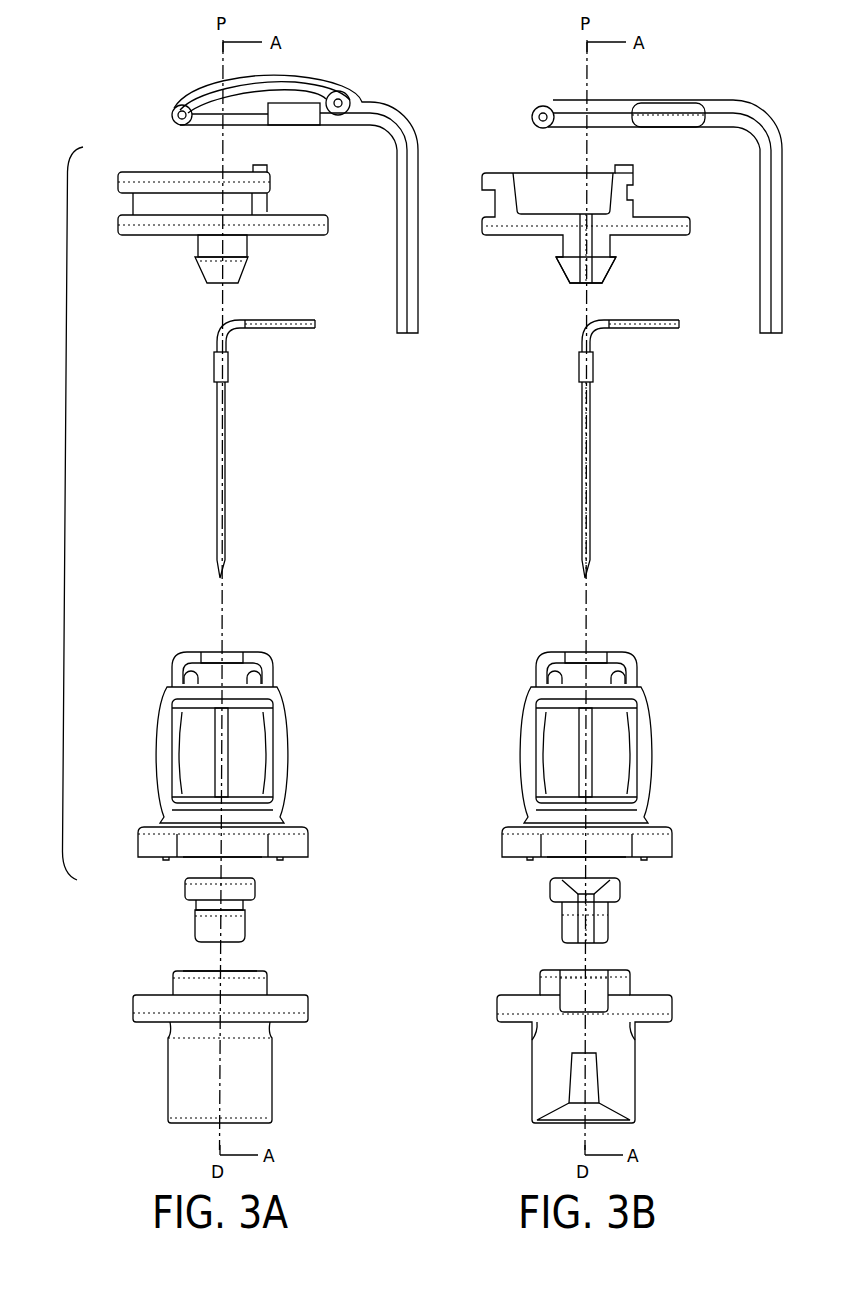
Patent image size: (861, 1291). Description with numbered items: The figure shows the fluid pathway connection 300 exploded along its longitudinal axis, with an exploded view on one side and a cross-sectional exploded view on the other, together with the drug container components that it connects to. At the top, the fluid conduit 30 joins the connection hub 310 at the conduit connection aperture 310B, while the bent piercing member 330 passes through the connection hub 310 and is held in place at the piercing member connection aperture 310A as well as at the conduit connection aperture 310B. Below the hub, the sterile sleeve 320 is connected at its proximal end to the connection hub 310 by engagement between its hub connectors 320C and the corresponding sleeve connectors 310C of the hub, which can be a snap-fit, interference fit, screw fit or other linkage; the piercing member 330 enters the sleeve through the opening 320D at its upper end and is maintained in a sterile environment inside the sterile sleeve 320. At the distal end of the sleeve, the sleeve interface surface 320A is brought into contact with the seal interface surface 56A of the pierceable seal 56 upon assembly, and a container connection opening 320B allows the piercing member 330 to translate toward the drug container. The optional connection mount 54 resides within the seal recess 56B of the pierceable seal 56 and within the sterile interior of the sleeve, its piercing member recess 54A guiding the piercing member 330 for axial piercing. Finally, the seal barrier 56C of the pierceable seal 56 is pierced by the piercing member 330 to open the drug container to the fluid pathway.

In FIG. 3A, the fluid conduit 30 is at (420, 180).
In FIG. 3B, the fluid conduit 30 is at (783, 180).
In FIG. 3A, the fluid pathway connection 300 is at (65, 520).
In FIG. 3A, the connection hub 310 is at (217, 240).
In FIG. 3B, the connection hub 310 is at (583, 238).
In FIG. 3B, the piercing member connection aperture 310A is at (585, 290).
In FIG. 3B, the conduit connection aperture 310B is at (630, 184).
In FIG. 3A, the sleeve connectors 310C is at (197, 258).
In FIG. 3B, the sleeve connectors 310C is at (620, 250).
In FIG. 3A, the sterile sleeve 320 is at (222, 747).
In FIG. 3B, the sterile sleeve 320 is at (584, 747).
In FIG. 3A, the sleeve interface surface 320A is at (300, 857).
In FIG. 3B, the sleeve interface surface 320A is at (634, 850).
In FIG. 3A, the container connection opening 320B is at (193, 858).
In FIG. 3B, the container connection opening 320B is at (514, 890).
In FIG. 3A, the hub connectors 320C is at (184, 683).
In FIG. 3B, the hub connectors 320C is at (594, 655).
In FIG. 3A, the housing top opening 320D is at (228, 648).
In FIG. 3B, the housing top opening 320D is at (625, 617).
In FIG. 3A, the piercing member 330 is at (227, 450).
In FIG. 3B, the piercing member 330 is at (591, 450).
In FIG. 3A, the connection mount 54 is at (268, 907).
In FIG. 3B, the connection mount 54 is at (633, 907).
In FIG. 3A, the piercing member recess 54A is at (228, 874).
In FIG. 3B, the piercing member recess 54A is at (592, 874).
In FIG. 3A, the pierceable seal 56 is at (226, 1041).
In FIG. 3B, the pierceable seal 56 is at (589, 1041).
In FIG. 3A, the seal interface surface 56A is at (287, 993).
In FIG. 3B, the seal interface surface 56A is at (648, 993).
In FIG. 3A, the seal recess 56B is at (188, 969).
In FIG. 3B, the seal recess 56B is at (550, 968).
In FIG. 3B, the seal barrier 56C is at (580, 1040).